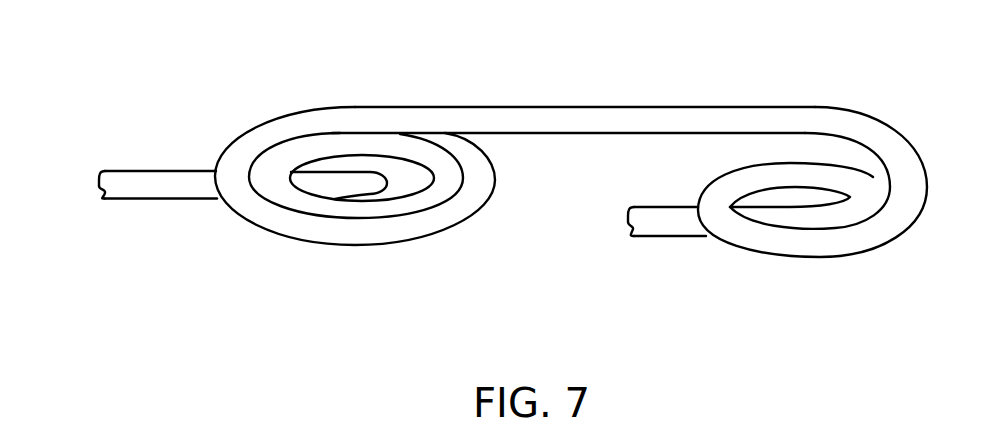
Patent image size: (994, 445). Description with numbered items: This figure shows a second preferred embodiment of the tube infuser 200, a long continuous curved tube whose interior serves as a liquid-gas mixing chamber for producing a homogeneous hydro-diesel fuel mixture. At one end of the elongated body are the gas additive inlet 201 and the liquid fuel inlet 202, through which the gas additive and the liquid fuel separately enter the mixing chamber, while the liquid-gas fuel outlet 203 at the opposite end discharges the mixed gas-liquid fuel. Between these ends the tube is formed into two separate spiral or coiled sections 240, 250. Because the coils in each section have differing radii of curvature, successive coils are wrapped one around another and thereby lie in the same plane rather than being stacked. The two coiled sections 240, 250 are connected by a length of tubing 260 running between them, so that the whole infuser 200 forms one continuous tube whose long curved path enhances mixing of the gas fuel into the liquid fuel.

The tube infuser 200 is at (741, 60).
The gas additive inlet 201 is at (74, 180).
The liquid fuel inlet 202 is at (80, 214).
The liquid-gas fuel outlet 203 is at (627, 215).
The first coiled section 240 is at (325, 132).
The second coiled section 250 is at (863, 172).
The connecting tubing 260 is at (565, 122).